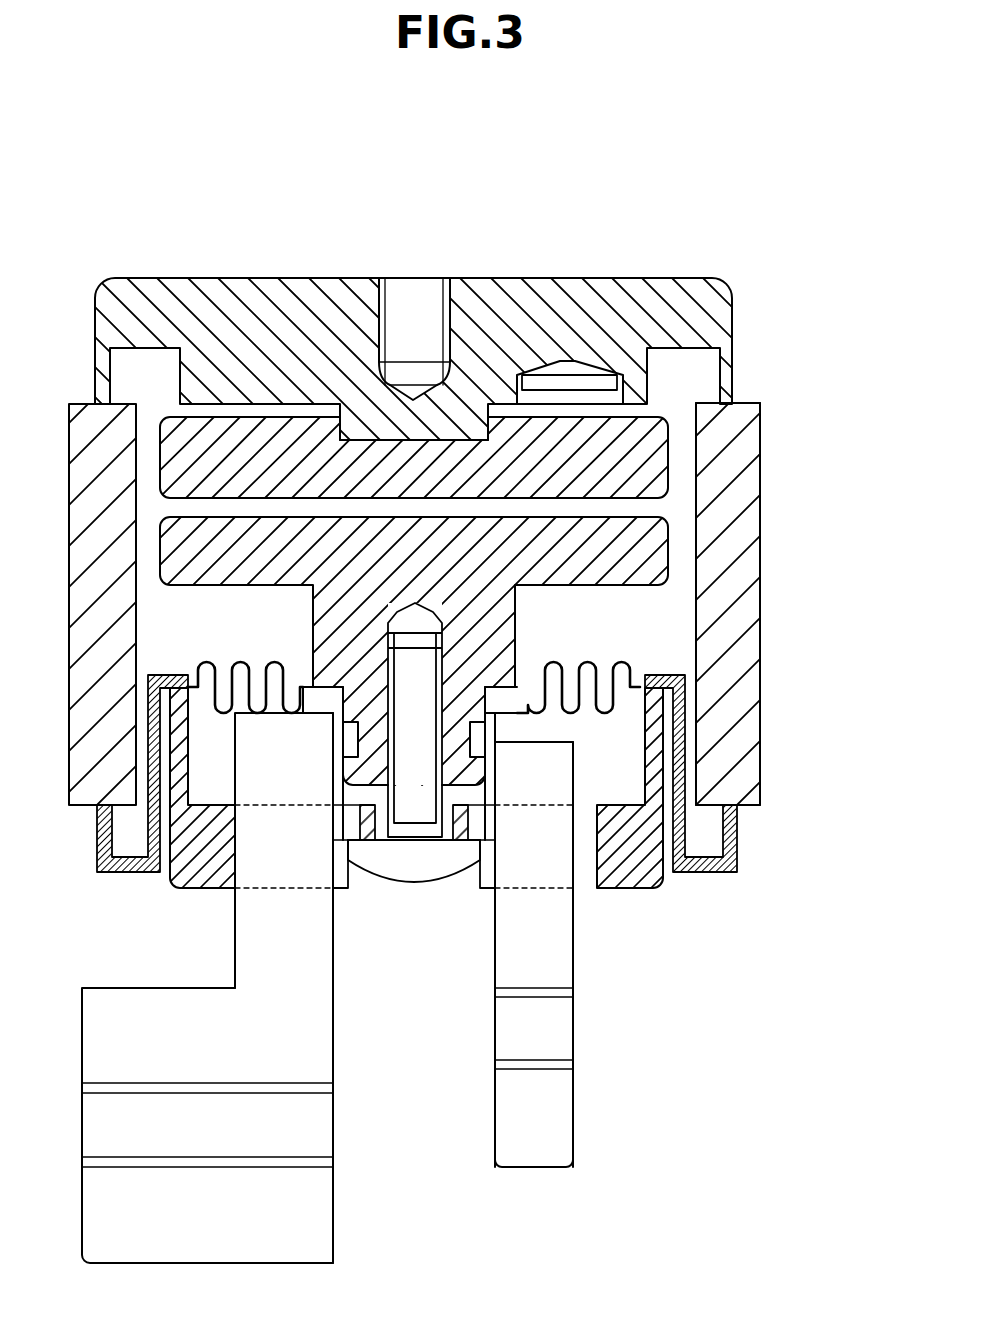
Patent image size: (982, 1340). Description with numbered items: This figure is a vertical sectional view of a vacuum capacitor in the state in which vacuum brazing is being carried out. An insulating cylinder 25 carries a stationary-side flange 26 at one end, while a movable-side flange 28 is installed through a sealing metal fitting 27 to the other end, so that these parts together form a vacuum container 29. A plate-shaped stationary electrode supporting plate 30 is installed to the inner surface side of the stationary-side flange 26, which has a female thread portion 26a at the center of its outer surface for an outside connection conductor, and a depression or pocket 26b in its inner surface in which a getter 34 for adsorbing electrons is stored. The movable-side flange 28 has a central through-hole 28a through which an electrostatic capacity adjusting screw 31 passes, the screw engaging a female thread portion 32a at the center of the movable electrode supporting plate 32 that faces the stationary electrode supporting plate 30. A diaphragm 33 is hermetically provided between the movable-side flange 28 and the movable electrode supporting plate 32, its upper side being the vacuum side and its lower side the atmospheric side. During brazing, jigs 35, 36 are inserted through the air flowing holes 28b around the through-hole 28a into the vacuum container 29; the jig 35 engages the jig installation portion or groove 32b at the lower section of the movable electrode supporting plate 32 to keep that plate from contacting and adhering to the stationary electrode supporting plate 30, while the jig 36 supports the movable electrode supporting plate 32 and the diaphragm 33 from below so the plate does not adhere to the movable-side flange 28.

The insulating cylinder 25 is at (752, 615).
The stationary-side flange 26 is at (290, 283).
The female thread portion 26a is at (405, 290).
The depression or pocket 26b is at (530, 362).
The sealing metal fitting 27 is at (745, 865).
The movable-side flange 28 is at (655, 880).
The through-hole 28a is at (452, 838).
The air flowing holes 28b is at (337, 895).
The vacuum container 29 is at (775, 558).
The stationary electrode supporting plate 30 is at (628, 423).
The electrostatic capacity adjusting screw 31 is at (405, 878).
The movable electrode supporting plate 32 is at (642, 532).
The female thread portion 32a is at (382, 682).
The jig installation portion or groove 32b is at (467, 742).
The diaphragm 33 is at (563, 668).
The getter 34 is at (560, 382).
The jig 35 is at (563, 1127).
The jig 36 is at (320, 1197).